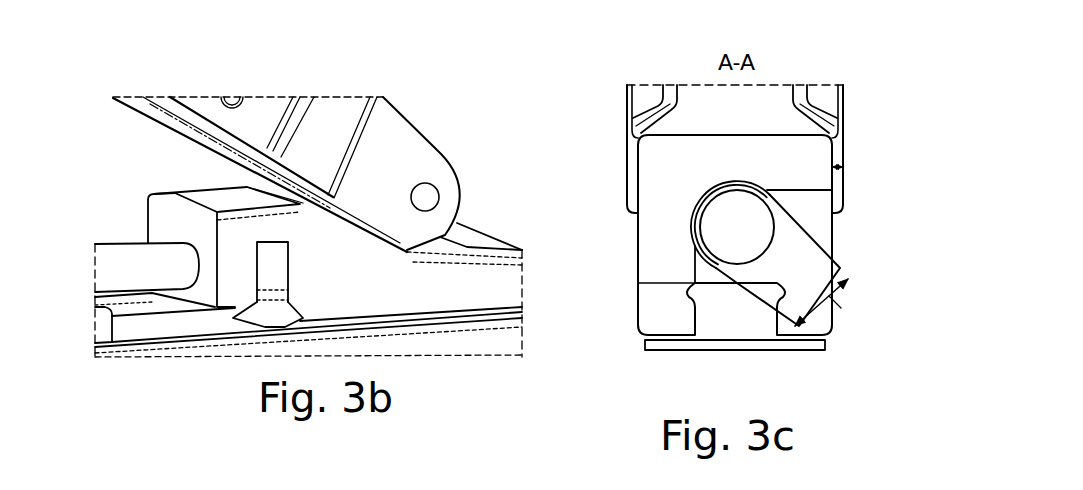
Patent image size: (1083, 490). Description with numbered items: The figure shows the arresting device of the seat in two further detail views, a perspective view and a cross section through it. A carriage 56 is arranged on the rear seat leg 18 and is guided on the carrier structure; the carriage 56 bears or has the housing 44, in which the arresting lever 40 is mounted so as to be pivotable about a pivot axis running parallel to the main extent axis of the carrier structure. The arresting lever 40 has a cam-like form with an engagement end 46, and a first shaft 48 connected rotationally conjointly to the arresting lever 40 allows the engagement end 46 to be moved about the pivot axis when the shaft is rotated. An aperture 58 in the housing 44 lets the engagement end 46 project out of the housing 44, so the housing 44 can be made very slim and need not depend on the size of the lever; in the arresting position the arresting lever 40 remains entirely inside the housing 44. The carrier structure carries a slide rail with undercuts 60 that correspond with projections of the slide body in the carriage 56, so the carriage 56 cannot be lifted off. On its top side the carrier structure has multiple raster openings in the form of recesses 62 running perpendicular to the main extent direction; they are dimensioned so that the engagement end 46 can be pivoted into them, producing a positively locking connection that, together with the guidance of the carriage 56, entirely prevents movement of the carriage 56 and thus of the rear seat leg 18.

In FIG. 3b, the rear seat leg 18 is at (165, 108).
In FIG. 3c, the rear seat leg 18 is at (770, 92).
In FIG. 3b, the arresting lever 40 is at (282, 284).
In FIG. 3c, the arresting lever 40 is at (767, 233).
In FIG. 3b, the housing 44 is at (185, 213).
In FIG. 3c, the housing 44 is at (655, 158).
In FIG. 3b, the engagement end 46 is at (300, 294).
In FIG. 3c, the engagement end 46 is at (835, 302).
In FIG. 3b, the first shaft 48 is at (120, 250).
In FIG. 3b, the carriage 56 is at (507, 293).
In FIG. 3c, the carriage 56 is at (845, 167).
In FIG. 3b, the aperture 58 is at (288, 281).
In FIG. 3c, the aperture 58 is at (817, 218).
In FIG. 3b, the undercuts 60 is at (112, 318).
In FIG. 3c, the recesses 62 is at (672, 317).